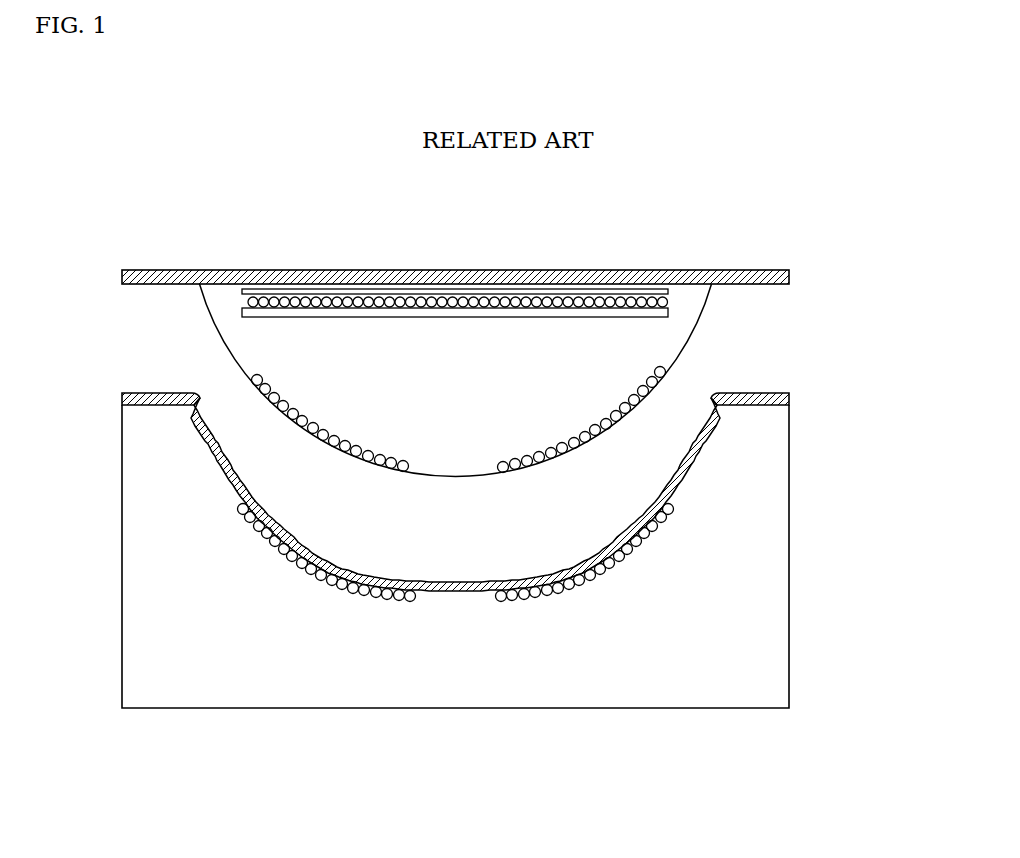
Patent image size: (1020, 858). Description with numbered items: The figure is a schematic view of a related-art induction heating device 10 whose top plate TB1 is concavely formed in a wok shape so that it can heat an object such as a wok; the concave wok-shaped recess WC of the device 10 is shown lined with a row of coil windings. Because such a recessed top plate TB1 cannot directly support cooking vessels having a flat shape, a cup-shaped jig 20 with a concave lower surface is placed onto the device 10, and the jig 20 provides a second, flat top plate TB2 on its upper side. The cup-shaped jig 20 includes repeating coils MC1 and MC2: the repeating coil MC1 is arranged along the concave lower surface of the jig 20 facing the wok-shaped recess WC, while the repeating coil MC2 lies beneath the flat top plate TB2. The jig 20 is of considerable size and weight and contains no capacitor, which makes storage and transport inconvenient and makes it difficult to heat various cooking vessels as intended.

The induction heating device 10 is at (765, 569).
The cup-shaped jig 20 is at (733, 328).
The top plate TB1 is at (768, 393).
The top plate TB2 is at (767, 270).
The repeating coil MC1 is at (256, 377).
The repeating coil MC2 is at (457, 300).
The wafer chuck WC is at (373, 586).